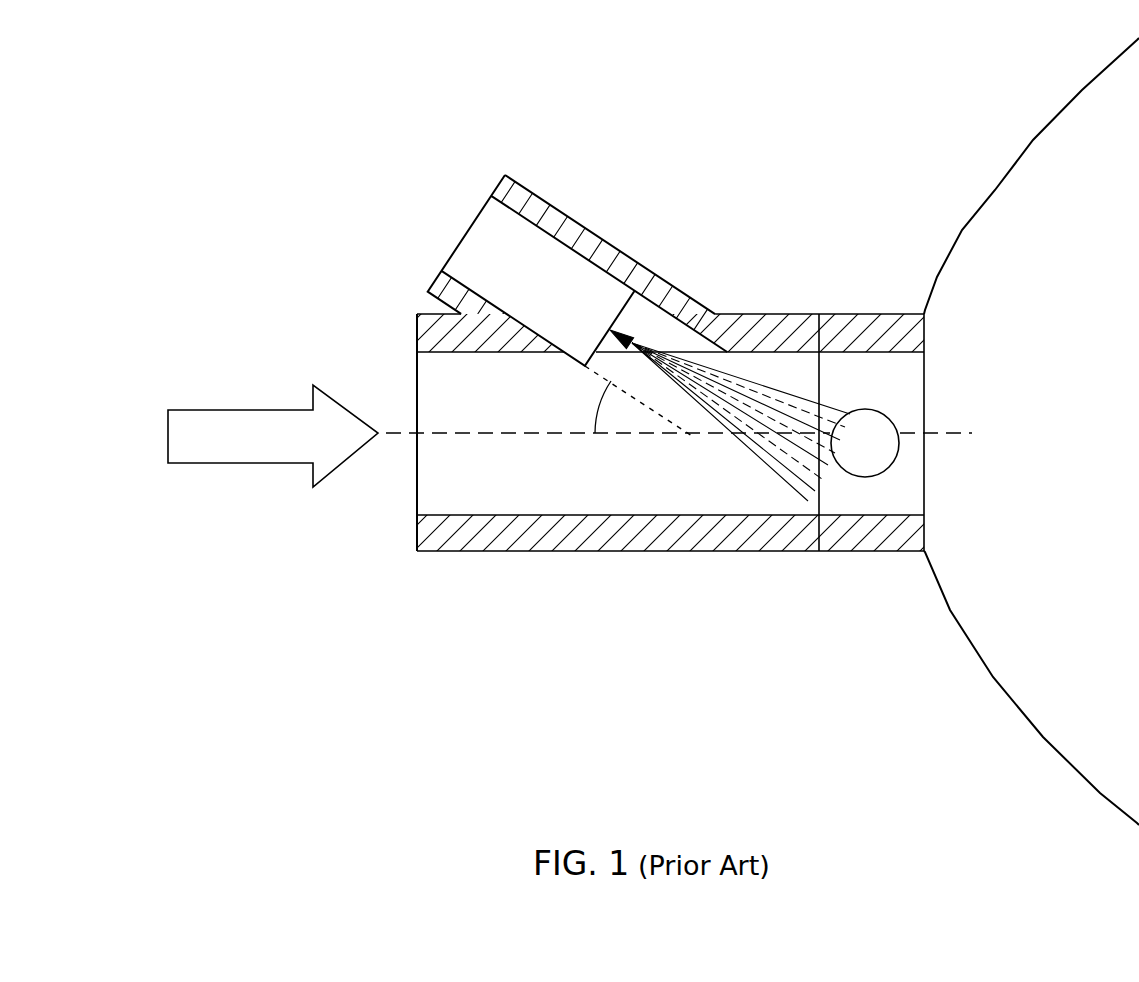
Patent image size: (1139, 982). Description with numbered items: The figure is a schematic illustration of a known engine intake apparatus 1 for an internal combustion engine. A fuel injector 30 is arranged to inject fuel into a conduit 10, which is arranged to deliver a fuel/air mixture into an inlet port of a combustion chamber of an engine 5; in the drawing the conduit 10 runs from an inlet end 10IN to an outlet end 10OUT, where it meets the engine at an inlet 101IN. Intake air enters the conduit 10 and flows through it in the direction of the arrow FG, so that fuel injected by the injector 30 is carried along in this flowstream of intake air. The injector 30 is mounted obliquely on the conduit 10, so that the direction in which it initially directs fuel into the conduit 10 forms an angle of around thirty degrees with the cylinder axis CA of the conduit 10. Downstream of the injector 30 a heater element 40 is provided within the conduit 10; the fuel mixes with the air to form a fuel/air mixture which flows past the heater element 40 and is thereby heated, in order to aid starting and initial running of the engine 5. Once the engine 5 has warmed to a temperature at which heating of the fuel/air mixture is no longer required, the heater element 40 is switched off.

The engine intake apparatus 1 is at (776, 243).
The engine 5 is at (1031, 220).
The conduit 10 is at (580, 542).
The conduit inlet 10IN is at (380, 490).
The conduit outlet 10OUT is at (950, 474).
The inlet of chamber 101IN is at (988, 400).
The fuel injector 30 is at (560, 265).
The heater element 40 is at (881, 457).
The cylinder axis CA is at (510, 434).
The direction of intake air flow FG is at (247, 464).